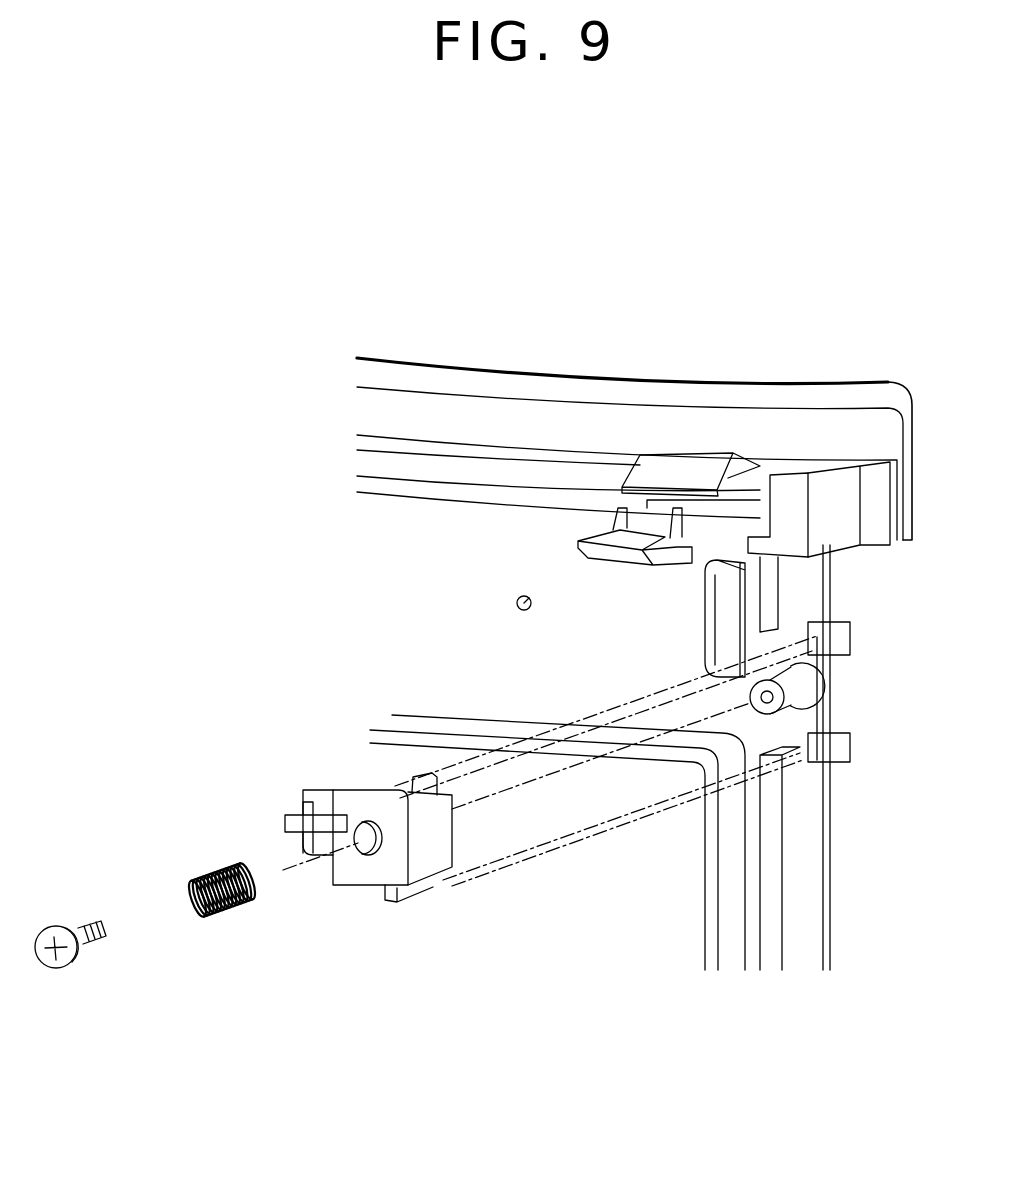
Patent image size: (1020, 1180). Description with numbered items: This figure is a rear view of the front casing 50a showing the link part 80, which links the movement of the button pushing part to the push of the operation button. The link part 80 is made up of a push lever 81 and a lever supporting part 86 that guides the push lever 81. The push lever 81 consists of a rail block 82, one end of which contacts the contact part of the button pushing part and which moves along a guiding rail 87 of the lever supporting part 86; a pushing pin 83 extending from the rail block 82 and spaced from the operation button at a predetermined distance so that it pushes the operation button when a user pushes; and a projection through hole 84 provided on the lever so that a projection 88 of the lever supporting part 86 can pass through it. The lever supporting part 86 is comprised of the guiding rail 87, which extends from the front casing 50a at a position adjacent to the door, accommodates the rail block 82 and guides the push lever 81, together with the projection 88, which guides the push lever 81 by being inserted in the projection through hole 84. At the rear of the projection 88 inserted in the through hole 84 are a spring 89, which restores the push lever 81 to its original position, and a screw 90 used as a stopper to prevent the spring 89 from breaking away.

The front casing 50a is at (670, 378).
The link part 80 is at (606, 808).
The push lever 81 is at (376, 939).
The rail block 82 is at (423, 887).
The pushing pin 83 is at (326, 840).
The projection through hole 84 is at (378, 855).
The lever supporting part 86 is at (839, 782).
The guiding rail 87 is at (840, 727).
The projection 88 is at (790, 722).
The spring 89 is at (215, 912).
The screw 90 is at (65, 968).